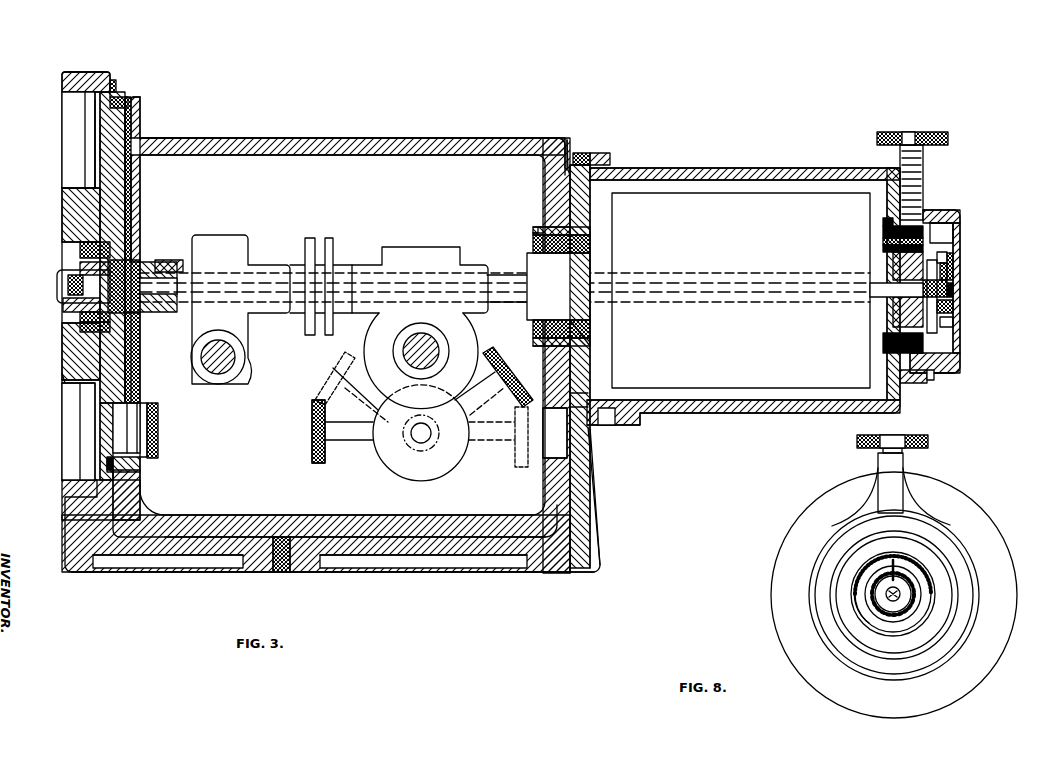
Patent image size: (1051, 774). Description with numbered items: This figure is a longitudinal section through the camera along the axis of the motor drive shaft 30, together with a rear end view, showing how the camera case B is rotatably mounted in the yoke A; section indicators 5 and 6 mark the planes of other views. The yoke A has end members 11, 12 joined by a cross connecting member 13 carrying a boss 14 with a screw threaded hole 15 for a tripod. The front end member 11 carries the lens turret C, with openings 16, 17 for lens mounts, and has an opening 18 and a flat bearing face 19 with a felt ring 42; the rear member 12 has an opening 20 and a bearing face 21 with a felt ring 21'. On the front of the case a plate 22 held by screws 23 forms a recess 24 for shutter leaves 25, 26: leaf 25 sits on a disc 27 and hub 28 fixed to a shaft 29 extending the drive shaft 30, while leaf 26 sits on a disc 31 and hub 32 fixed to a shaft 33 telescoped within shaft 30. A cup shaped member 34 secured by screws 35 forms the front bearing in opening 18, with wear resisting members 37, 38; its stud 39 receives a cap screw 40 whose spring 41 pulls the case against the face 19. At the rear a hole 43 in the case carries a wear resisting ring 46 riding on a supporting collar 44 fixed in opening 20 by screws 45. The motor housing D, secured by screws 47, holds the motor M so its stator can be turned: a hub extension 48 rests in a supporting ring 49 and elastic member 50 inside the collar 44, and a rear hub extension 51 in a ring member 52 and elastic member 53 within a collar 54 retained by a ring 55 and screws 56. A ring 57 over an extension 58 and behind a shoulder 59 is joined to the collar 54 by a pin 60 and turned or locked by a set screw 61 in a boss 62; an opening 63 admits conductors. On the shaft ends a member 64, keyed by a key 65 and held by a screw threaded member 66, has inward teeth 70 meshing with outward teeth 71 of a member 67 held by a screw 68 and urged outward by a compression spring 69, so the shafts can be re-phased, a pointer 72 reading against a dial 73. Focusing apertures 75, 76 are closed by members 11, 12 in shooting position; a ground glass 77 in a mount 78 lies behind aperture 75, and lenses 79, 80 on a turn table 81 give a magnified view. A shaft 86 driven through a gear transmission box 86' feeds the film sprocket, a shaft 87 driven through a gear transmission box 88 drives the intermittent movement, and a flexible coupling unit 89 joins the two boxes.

In FIG. 3, the section line 5 is at (131, 15).
In FIG. 3, the section line 6 is at (597, 615).
In FIG. 3, the end member 11 is at (96, 70).
In FIG. 3, the end member 12 is at (570, 160).
In FIG. 3, the cross connecting member 13 is at (436, 560).
In FIG. 3, the boss 14 is at (312, 573).
In FIG. 3, the screw threaded hole 15 is at (286, 573).
In FIG. 3, the opening 16 is at (78, 93).
In FIG. 3, the opening 17 is at (80, 386).
In FIG. 3, the opening 18 is at (82, 341).
In FIG. 3, the flat bearing face 19 is at (72, 212).
In FIG. 3, the opening 20 is at (584, 350).
In FIG. 3, the flat bearing face 21 is at (590, 354).
In FIG. 3, the felt ring 21' is at (575, 290).
In FIG. 3, the plate 22 is at (126, 97).
In FIG. 3, the screws 23 is at (141, 102).
In FIG. 3, the recess 24 is at (166, 138).
In FIG. 3, the shutter leaf 25 is at (128, 130).
In FIG. 3, the shutter leaf 26 is at (117, 130).
In FIG. 3, the disc 27 is at (140, 186).
In FIG. 3, the hub 28 is at (138, 265).
In FIG. 3, the shaft 29 is at (168, 268).
In FIG. 3, the motor drive shaft 30 is at (498, 280).
In FIG. 3, the disc 31 is at (136, 208).
In FIG. 3, the hub 32 is at (143, 306).
In FIG. 3, the shaft 33 is at (166, 300).
In FIG. 3, the cup shaped member 34 is at (80, 250).
In FIG. 3, the screws 35 is at (512, 292).
In FIG. 3, the wear resisting member 37 is at (80, 330).
In FIG. 3, the wear resisting member 38 is at (80, 318).
In FIG. 3, the central upstanding stud 39 is at (63, 308).
In FIG. 3, the cap screw 40 is at (58, 290).
In FIG. 3, the spring 41 is at (68, 272).
In FIG. 3, the felt ring 42 is at (107, 462).
In FIG. 3, the hole 43 is at (547, 226).
In FIG. 3, the supporting collar 44 is at (590, 243).
In FIG. 3, the screws 45 is at (590, 229).
In FIG. 3, the wear resisting ring 46 is at (538, 232).
In FIG. 3, the screws 47 is at (608, 158).
In FIG. 3, the hub extension 48 is at (534, 310).
In FIG. 3, the supporting ring 49 is at (537, 333).
In FIG. 3, the elastic member 50 is at (542, 344).
In FIG. 3, the hub extension 51 is at (890, 350).
In FIG. 3, the ring member 52 is at (883, 246).
In FIG. 3, the elastic member 53 is at (884, 236).
In FIG. 3, the collar 54 is at (942, 216).
In FIG. 8, the collar 54 is at (820, 547).
In FIG. 3, the ring 55 is at (888, 220).
In FIG. 3, the screws 56 is at (883, 228).
In FIG. 3, the ring 57 is at (912, 383).
In FIG. 8, the ring 57 is at (806, 590).
In FIG. 3, the extension 58 is at (950, 374).
In FIG. 3, the shoulder 59 is at (953, 226).
In FIG. 3, the pin 60 is at (931, 380).
In FIG. 3, the set screw 61 is at (933, 132).
In FIG. 8, the set screw 61 is at (928, 438).
In FIG. 3, the boss 62 is at (924, 178).
In FIG. 8, the boss 62 is at (886, 466).
In FIG. 3, the opening 63 is at (612, 425).
In FIG. 3, the member 64 is at (937, 325).
In FIG. 8, the member 64 is at (866, 617).
In FIG. 3, the key 65 is at (920, 255).
In FIG. 3, the screw threaded member 66 is at (928, 327).
In FIG. 3, the member 67 is at (947, 283).
In FIG. 8, the member 67 is at (902, 592).
In FIG. 3, the screw 68 is at (953, 292).
In FIG. 8, the screw 68 is at (897, 598).
In FIG. 3, the compression spring 69 is at (953, 305).
In FIG. 3, the gear teeth 70 is at (947, 258).
In FIG. 8, the gear teeth 70 is at (872, 583).
In FIG. 3, the gear teeth 71 is at (947, 272).
In FIG. 8, the gear teeth 71 is at (893, 599).
In FIG. 3, the pointer 72 is at (953, 266).
In FIG. 8, the pointer 72 is at (908, 566).
In FIG. 3, the dial 73 is at (953, 320).
In FIG. 3, the aperture 75 is at (118, 423).
In FIG. 3, the aperture 76 is at (547, 440).
In FIG. 3, the ground glass 77 is at (158, 432).
In FIG. 3, the mount 78 is at (145, 463).
In FIG. 3, the lens 79 is at (318, 437).
In FIG. 3, the lens 80 is at (510, 393).
In FIG. 3, the turn table 81 is at (385, 470).
In FIG. 3, the shaft 86 is at (412, 361).
In FIG. 3, the gear transmission box 86' is at (420, 266).
In FIG. 3, the shaft 87 is at (228, 362).
In FIG. 3, the gear transmission box 88 is at (236, 243).
In FIG. 3, the flexible coupling unit 89 is at (432, 452).
In FIG. 3, the yoke A is at (538, 575).
In FIG. 3, the camera case B is at (365, 138).
In FIG. 3, the lens turret C is at (55, 235).
In FIG. 3, the motor housing D is at (648, 168).
In FIG. 8, the motor housing D is at (792, 511).
In FIG. 3, the camera motor M is at (737, 230).